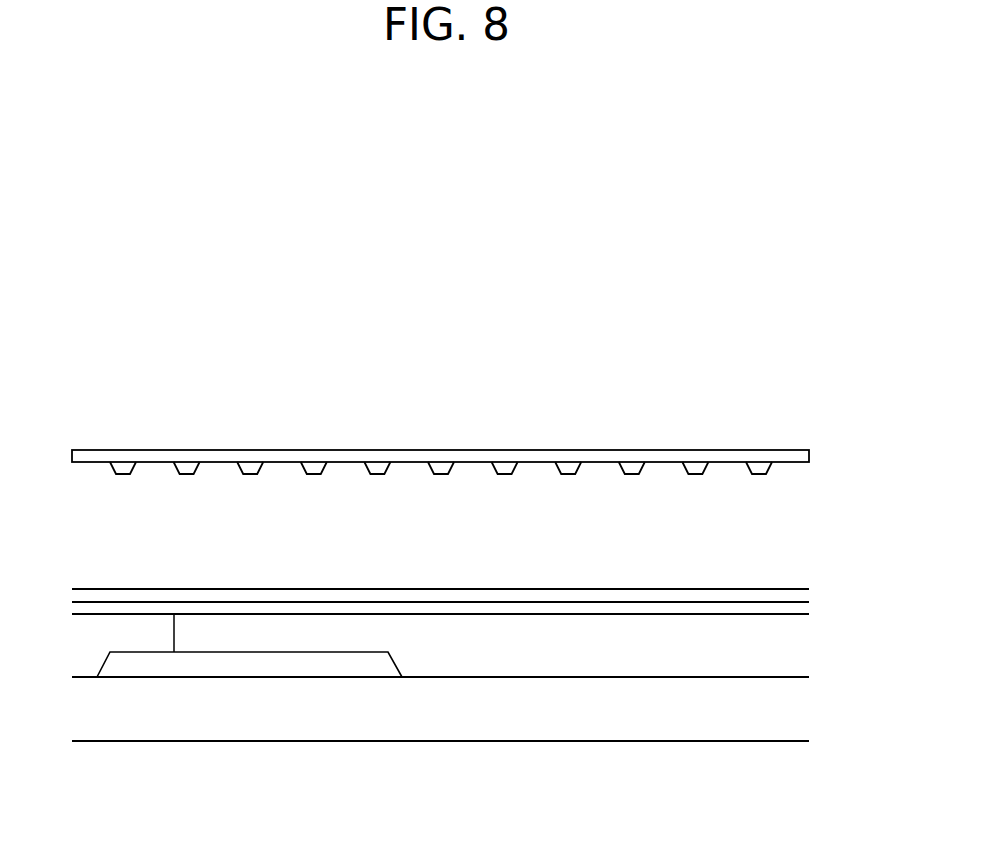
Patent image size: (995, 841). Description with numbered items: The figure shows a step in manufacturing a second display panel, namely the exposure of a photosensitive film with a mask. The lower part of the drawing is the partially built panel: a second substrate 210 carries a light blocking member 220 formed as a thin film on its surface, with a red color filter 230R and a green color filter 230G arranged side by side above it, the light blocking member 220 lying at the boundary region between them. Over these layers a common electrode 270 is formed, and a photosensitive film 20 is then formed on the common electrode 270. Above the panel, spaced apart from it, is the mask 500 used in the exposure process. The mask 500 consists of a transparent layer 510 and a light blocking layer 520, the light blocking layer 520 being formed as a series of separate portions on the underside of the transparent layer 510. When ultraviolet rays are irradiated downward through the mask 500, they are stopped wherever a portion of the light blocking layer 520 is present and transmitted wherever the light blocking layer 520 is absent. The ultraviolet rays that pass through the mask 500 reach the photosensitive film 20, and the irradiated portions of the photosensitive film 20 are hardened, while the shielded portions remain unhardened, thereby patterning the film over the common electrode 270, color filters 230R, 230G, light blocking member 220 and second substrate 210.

The mask 500 is at (331, 384).
The transparent layer 510 is at (224, 455).
The light blocking layer 520 is at (311, 470).
The photosensitive film 20 is at (605, 597).
The common electrode 270 is at (381, 609).
The red color filter 230R is at (129, 646).
The green color filter 230G is at (571, 646).
The light blocking member 220 is at (308, 666).
The second substrate 210 is at (553, 720).